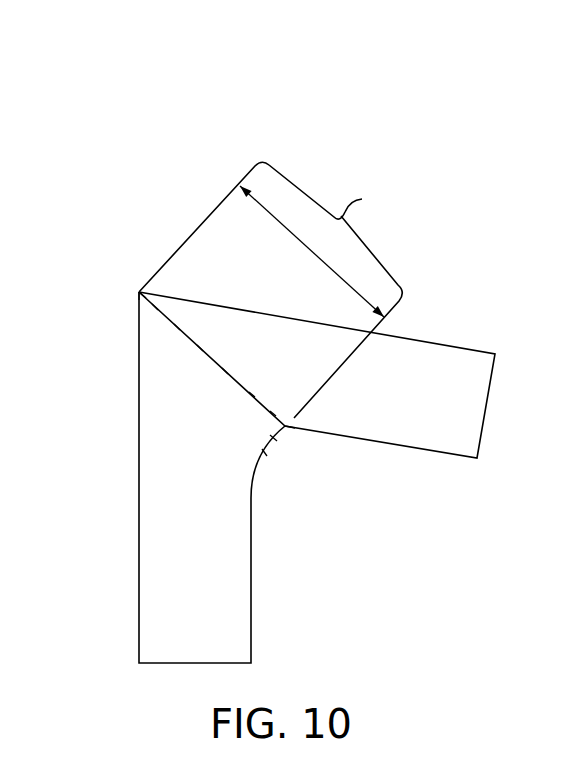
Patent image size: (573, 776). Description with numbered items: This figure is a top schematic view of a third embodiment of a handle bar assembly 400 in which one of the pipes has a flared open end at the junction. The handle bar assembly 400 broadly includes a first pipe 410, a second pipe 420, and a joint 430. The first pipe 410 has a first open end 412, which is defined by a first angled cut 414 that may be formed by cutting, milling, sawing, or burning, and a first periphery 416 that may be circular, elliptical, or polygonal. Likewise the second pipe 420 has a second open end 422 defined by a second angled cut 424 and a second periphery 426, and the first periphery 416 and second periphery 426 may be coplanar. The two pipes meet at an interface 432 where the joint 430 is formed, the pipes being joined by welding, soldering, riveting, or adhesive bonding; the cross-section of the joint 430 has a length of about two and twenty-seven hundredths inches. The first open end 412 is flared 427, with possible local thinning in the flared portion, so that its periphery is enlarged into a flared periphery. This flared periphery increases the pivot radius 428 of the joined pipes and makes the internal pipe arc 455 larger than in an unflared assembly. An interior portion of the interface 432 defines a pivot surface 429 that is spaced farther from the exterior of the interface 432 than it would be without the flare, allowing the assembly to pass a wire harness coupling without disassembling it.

The handle bar assembly 400 is at (244, 84).
The first pipe 410 is at (138, 568).
The first open end 412 is at (155, 307).
The first angled cut 414 is at (177, 328).
The first periphery 416 is at (200, 349).
The second pipe 420 is at (452, 342).
The second open end 422 is at (225, 372).
The second angled cut 424 is at (252, 394).
The second periphery 426 is at (273, 414).
The flared portion 427 is at (274, 438).
The pivot radius 428 is at (265, 452).
The pivot surface 429 is at (285, 426).
The joint 430 is at (139, 292).
The interface 432 is at (139, 292).
The internal pipe arc 455 is at (274, 290).